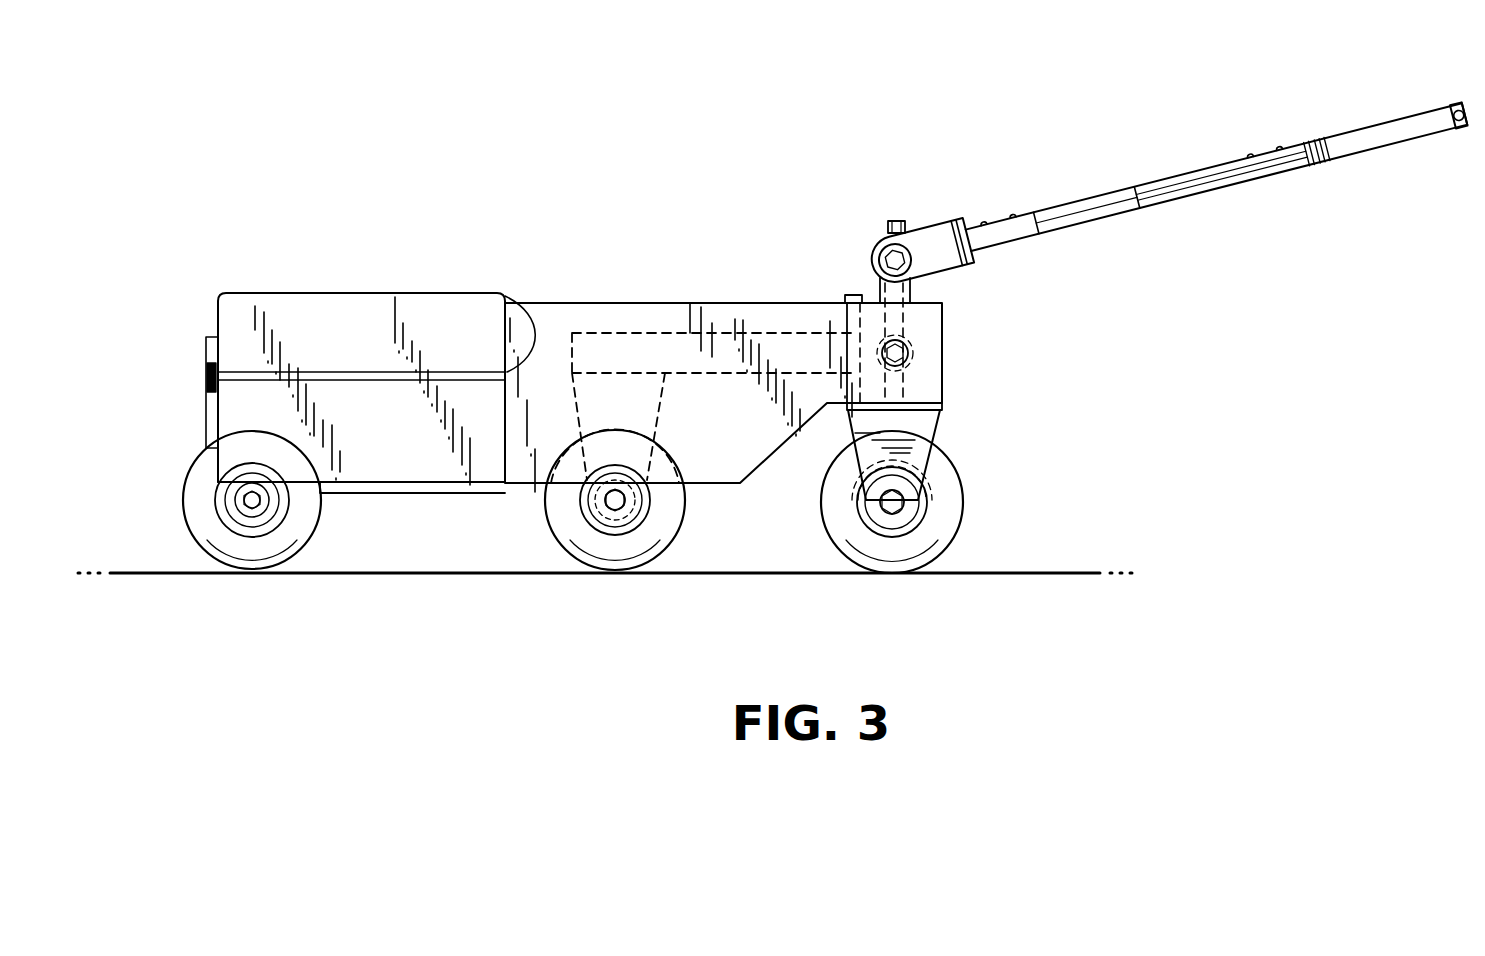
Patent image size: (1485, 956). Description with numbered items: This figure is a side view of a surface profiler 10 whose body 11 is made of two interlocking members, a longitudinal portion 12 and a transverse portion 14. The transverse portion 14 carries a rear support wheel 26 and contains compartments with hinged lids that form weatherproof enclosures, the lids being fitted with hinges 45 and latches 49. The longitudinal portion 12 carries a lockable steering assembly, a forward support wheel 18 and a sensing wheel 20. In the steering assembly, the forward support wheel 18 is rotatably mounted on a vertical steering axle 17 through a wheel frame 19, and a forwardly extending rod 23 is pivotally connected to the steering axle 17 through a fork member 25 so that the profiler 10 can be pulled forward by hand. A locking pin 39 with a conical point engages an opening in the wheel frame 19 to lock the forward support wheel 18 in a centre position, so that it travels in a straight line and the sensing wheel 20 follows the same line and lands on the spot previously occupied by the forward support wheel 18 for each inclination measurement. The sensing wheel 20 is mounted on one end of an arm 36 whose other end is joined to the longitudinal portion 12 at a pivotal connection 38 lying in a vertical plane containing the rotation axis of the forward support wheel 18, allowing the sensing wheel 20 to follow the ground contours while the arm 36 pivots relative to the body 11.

The surface profiler 10 is at (503, 153).
The body 11 is at (435, 230).
The longitudinal portion 12 is at (716, 300).
The transverse portion 14 is at (320, 288).
The vertical steering axle 17 is at (889, 220).
The forward support wheel 18 is at (935, 527).
The wheel frame 19 is at (922, 422).
The sensing wheel 20 is at (655, 528).
The forwardly extending rod 23 is at (1218, 170).
The fork member 25 is at (938, 233).
The rear support wheel 26 is at (290, 528).
The arm 36 is at (652, 350).
The pivotal connection 38 is at (905, 352).
The locking pin 39 is at (853, 295).
The hinges 45 is at (538, 303).
The latches 49 is at (212, 373).